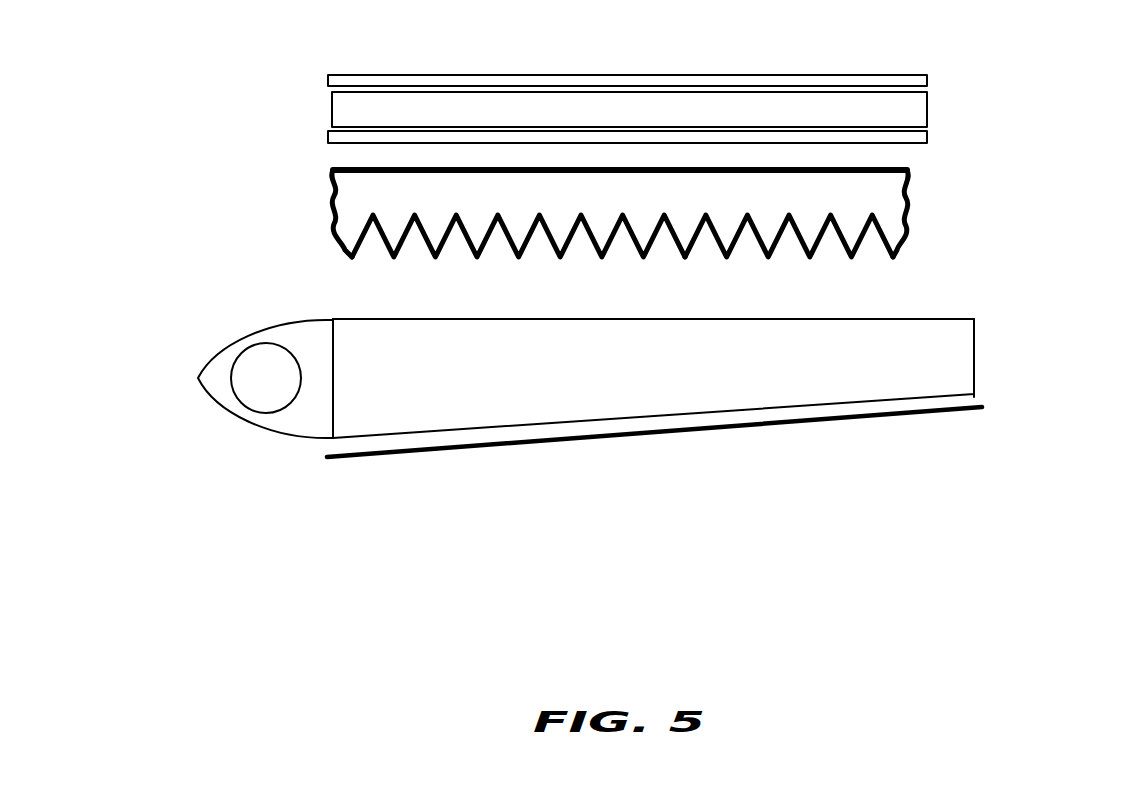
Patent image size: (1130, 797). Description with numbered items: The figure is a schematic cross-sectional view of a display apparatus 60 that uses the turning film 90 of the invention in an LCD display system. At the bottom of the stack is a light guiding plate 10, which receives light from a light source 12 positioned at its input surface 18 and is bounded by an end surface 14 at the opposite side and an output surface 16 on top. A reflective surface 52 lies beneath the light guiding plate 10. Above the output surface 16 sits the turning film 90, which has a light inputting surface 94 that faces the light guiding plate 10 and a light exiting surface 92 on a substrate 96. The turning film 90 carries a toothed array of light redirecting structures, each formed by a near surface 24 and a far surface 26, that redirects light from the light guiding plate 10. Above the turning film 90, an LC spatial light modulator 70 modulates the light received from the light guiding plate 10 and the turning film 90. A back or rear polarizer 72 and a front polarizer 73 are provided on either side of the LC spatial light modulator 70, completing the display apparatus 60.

The light guiding plate 10 is at (528, 380).
The light source 12 is at (275, 378).
The end surface 14 is at (975, 365).
The output surface 16 is at (883, 318).
The input surface 18 is at (330, 413).
The near surface 24 is at (380, 243).
The far surface 26 is at (857, 257).
The reflective surface 52 is at (755, 428).
The display apparatus 60 is at (664, 648).
The LC spatial light modulator 70 is at (917, 108).
The rear polarizer 72 is at (917, 137).
The front polarizer 73 is at (893, 75).
The turning film 90 is at (312, 183).
The light exiting surface 92 is at (900, 168).
The light inputting surface 94 is at (908, 215).
The substrate 96 is at (595, 188).